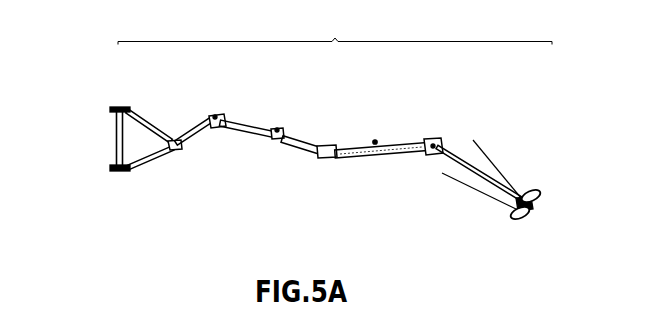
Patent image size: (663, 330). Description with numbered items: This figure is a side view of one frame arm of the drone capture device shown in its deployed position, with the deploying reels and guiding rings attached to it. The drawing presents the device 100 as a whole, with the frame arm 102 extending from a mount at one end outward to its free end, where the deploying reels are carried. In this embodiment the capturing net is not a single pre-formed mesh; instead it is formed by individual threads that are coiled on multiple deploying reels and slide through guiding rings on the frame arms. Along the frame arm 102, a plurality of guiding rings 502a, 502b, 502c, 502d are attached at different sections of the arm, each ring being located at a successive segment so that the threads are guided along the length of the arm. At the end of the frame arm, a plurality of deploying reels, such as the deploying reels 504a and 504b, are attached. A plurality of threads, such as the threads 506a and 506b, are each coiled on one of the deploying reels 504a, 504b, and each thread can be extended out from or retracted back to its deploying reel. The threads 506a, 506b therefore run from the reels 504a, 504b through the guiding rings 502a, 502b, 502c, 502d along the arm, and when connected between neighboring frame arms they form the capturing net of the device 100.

The articulated arm assembly 100 is at (112, 160).
The arm 102 is at (335, 29).
The guiding ring 502a is at (440, 142).
The guiding ring 502b is at (375, 140).
The guiding ring 502c is at (278, 130).
The guiding ring 502d is at (215, 117).
The deploying reel 504a is at (539, 203).
The deploying reel 504b is at (512, 215).
The thread 506a is at (493, 163).
The thread 506b is at (456, 180).